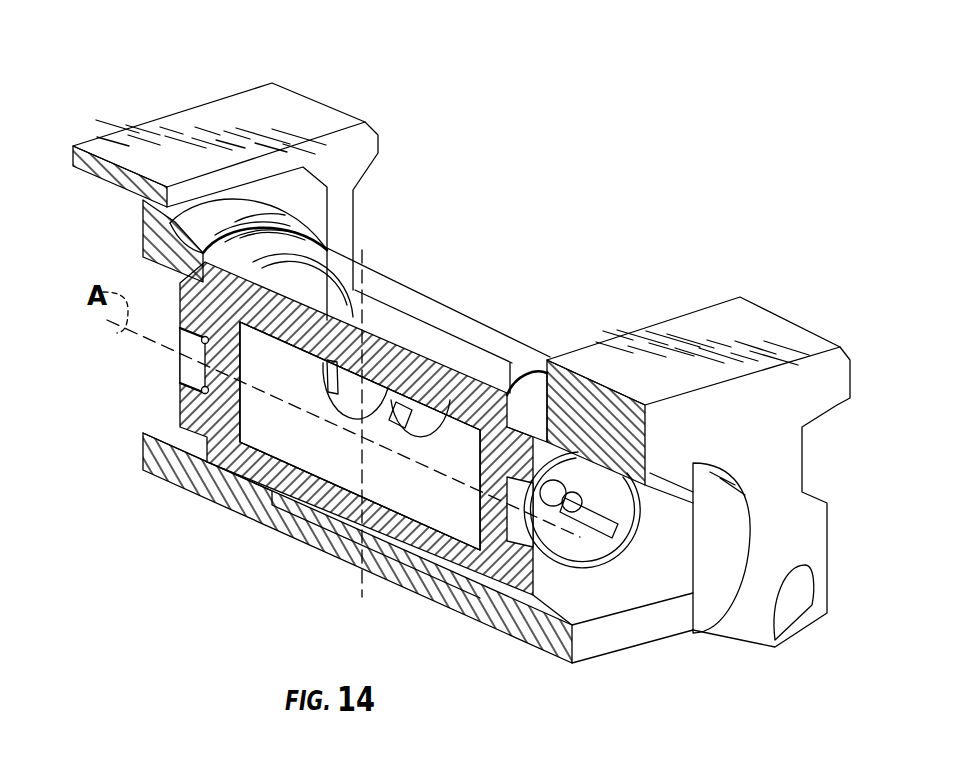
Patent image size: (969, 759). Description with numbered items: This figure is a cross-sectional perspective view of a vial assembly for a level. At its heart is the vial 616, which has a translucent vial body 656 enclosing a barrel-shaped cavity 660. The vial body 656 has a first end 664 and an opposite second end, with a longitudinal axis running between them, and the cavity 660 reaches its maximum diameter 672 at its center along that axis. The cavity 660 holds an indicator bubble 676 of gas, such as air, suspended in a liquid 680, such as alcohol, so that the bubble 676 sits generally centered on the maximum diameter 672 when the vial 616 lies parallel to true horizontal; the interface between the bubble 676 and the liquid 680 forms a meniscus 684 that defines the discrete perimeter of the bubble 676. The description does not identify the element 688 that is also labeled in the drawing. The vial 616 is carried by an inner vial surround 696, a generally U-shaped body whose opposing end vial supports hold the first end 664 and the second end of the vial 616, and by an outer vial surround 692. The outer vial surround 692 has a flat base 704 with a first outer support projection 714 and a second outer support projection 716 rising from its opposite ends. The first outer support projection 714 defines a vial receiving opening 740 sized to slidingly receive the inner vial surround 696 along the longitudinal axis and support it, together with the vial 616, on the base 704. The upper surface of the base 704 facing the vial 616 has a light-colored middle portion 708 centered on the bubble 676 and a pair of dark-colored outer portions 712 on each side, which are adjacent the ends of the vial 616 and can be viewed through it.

The outer vial surround 692 is at (153, 106).
The first outer support projection 714 is at (277, 112).
The vial receiving opening 740 is at (103, 180).
The inner vial surround 696 is at (286, 206).
The vial body 656 is at (265, 300).
The vial 616 is at (428, 280).
The indicator bubble 676 is at (387, 400).
The meniscus 684 is at (447, 425).
The second outer support projection 716 is at (772, 318).
The first end 664 is at (180, 384).
The flat base 704 is at (145, 455).
The outer portions 712 is at (175, 485).
The cavity 660 is at (255, 420).
The liquid 680 is at (360, 436).
The middle portion 708 is at (290, 505).
The maximum diameter 672 is at (360, 583).
The roller 688 is at (600, 568).